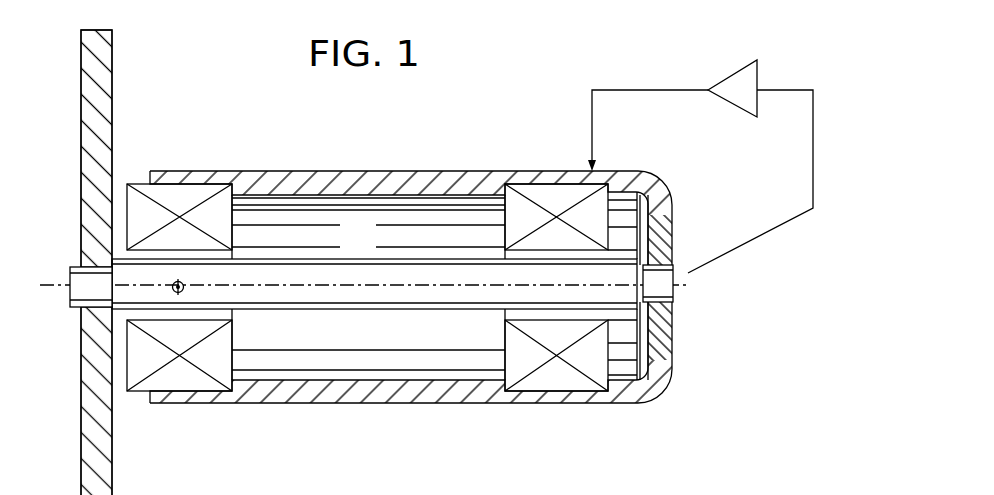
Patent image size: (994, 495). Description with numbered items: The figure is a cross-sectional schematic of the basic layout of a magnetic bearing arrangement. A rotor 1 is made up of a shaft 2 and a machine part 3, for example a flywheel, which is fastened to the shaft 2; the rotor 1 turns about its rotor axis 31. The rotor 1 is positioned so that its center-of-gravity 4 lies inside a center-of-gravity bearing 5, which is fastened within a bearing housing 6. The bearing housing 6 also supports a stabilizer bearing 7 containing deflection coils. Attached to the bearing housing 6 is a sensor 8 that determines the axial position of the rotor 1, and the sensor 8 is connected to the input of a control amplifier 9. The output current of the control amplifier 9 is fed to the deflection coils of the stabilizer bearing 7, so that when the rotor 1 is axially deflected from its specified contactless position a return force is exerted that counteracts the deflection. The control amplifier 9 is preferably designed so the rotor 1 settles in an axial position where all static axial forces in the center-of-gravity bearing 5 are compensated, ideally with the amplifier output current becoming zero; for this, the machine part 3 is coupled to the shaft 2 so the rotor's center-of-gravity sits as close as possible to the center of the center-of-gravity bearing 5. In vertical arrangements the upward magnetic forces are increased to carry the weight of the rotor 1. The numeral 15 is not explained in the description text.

The rotor 1 is at (72, 197).
The shaft 2 is at (350, 272).
The machine part 3 is at (103, 60).
The rotor axis 31 is at (66, 291).
The center-of-gravity 4 is at (172, 287).
The center-of-gravity bearing 5 is at (175, 195).
The bearing housing 6 is at (313, 391).
The stabilizer bearing 7 is at (550, 190).
The sensor 8 is at (665, 280).
The control amplifier 9 is at (722, 85).
The element of adjacent figure 15 is at (578, 489).